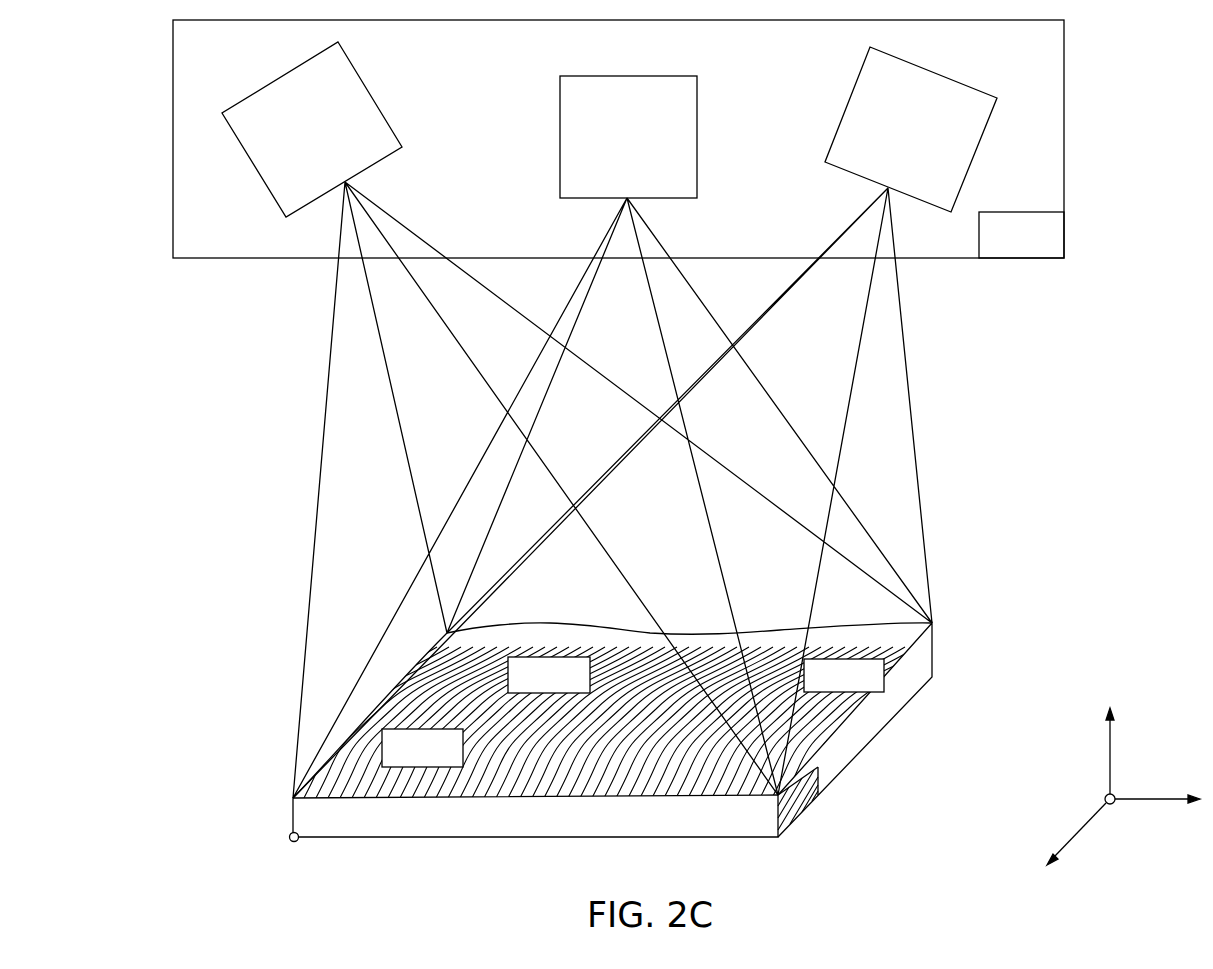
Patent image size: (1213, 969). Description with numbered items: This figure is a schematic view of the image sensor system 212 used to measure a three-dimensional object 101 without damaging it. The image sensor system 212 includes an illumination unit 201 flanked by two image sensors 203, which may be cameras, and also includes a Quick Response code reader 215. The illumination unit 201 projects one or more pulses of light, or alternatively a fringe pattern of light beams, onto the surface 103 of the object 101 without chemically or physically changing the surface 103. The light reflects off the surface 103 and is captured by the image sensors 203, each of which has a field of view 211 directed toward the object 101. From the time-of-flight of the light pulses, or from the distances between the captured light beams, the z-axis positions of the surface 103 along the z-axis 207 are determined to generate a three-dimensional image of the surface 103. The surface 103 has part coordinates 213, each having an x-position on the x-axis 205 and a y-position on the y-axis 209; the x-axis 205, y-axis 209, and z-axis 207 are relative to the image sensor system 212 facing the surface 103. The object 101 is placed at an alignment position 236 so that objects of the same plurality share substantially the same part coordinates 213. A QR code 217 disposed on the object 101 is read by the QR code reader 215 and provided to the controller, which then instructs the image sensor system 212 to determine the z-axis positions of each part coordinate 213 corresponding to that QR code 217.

The object 101 is at (526, 826).
The surface 103 is at (915, 660).
The illumination unit 201 is at (610, 143).
The image sensor 203 is at (293, 133).
The x-axis 205 is at (1152, 800).
The z-axis 207 is at (1110, 760).
The y-axis 209 is at (1080, 827).
The field of view 211 is at (290, 392).
The image sensor system 212 is at (1064, 103).
The part coordinate 213 is at (369, 737).
The Quick Response (QR) code reader 215 is at (1005, 248).
The QR code 217 is at (802, 800).
The alignment position 236 is at (290, 837).